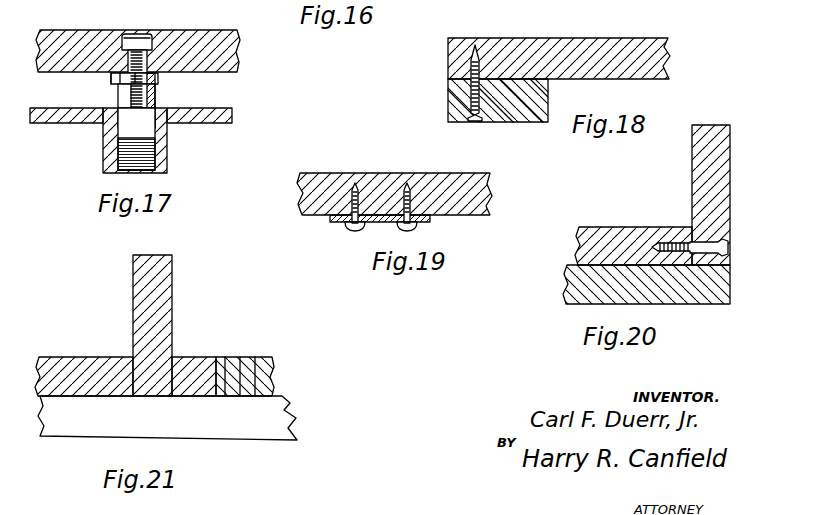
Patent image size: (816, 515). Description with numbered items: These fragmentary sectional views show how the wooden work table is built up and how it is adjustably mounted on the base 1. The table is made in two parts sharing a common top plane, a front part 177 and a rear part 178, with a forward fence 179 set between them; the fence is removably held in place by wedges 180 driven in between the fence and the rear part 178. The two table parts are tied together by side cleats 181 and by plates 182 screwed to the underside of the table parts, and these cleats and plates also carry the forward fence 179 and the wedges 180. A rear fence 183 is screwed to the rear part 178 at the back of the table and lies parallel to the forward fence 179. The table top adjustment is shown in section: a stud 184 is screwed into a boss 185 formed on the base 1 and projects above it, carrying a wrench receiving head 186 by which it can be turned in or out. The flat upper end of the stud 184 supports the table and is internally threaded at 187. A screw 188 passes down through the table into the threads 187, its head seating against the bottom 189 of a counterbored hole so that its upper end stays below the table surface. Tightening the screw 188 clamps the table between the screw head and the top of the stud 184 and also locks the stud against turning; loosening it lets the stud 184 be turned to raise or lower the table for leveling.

In FIG. 17, the base 1 is at (233, 120).
In FIG. 17, the front part 177 is at (221, 39).
In FIG. 18, the front part 177 is at (462, 59).
In FIG. 19, the front part 177 is at (384, 173).
In FIG. 21, the front part 177 is at (80, 364).
In FIG. 20, the rear part 178 is at (623, 232).
In FIG. 21, the rear part 178 is at (255, 360).
In FIG. 21, the forward fence 179 is at (172, 298).
In FIG. 21, the wedges 180 is at (191, 360).
In FIG. 18, the side cleats 181 is at (466, 97).
In FIG. 21, the side cleats 181 is at (286, 423).
In FIG. 19, the plates 182 is at (346, 225).
In FIG. 20, the rear fence 183 is at (722, 188).
In FIG. 17, the studs 184 is at (154, 102).
In FIG. 17, the bosses 185 is at (166, 152).
In FIG. 17, the wrench receiving heads 186 is at (111, 79).
In FIG. 17, the internal threads 187 is at (159, 78).
In FIG. 17, the screws 188 is at (136, 34).
In FIG. 17, the bottoms of counterbored holes 189 is at (156, 44).